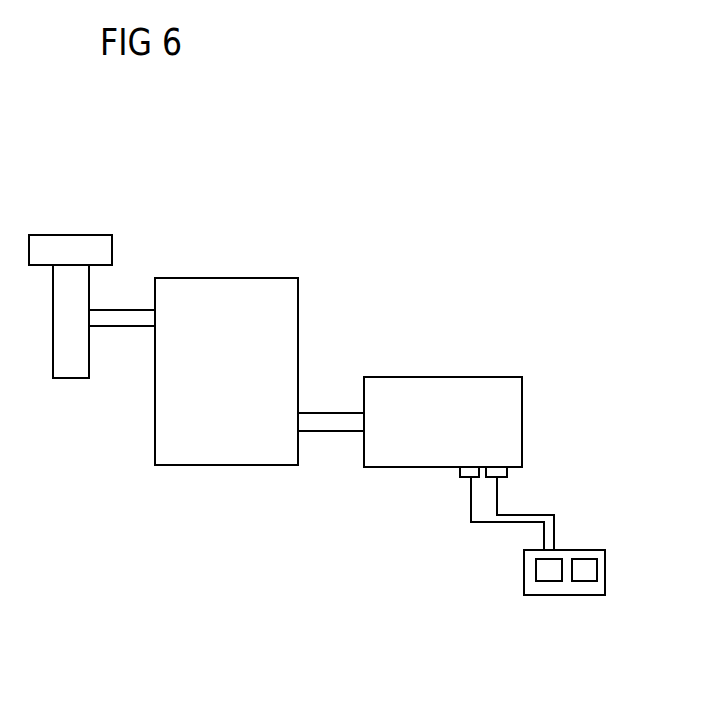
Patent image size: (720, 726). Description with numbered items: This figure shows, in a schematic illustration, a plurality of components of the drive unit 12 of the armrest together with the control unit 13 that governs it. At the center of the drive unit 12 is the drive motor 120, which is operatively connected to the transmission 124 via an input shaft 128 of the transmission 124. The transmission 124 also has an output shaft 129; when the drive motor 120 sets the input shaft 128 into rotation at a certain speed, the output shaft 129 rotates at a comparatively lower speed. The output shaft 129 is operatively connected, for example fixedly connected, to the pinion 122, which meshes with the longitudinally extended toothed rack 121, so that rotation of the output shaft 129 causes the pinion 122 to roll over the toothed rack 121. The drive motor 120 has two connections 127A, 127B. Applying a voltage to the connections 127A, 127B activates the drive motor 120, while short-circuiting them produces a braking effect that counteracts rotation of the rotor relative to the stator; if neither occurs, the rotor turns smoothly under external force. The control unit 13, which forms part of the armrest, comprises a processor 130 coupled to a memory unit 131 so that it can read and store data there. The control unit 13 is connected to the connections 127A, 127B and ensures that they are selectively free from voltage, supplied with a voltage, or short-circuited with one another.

The drive unit 12 is at (303, 250).
The control unit 13 is at (566, 612).
The drive motor 120 is at (425, 390).
The toothed rack 121 is at (82, 247).
The pinion 122 is at (70, 363).
The transmission 124 is at (205, 453).
The connection 127A is at (457, 475).
The connection 127B is at (508, 473).
The input shaft 128 is at (332, 422).
The output shaft 129 is at (128, 317).
The processor 130 is at (542, 577).
The memory unit 131 is at (587, 568).